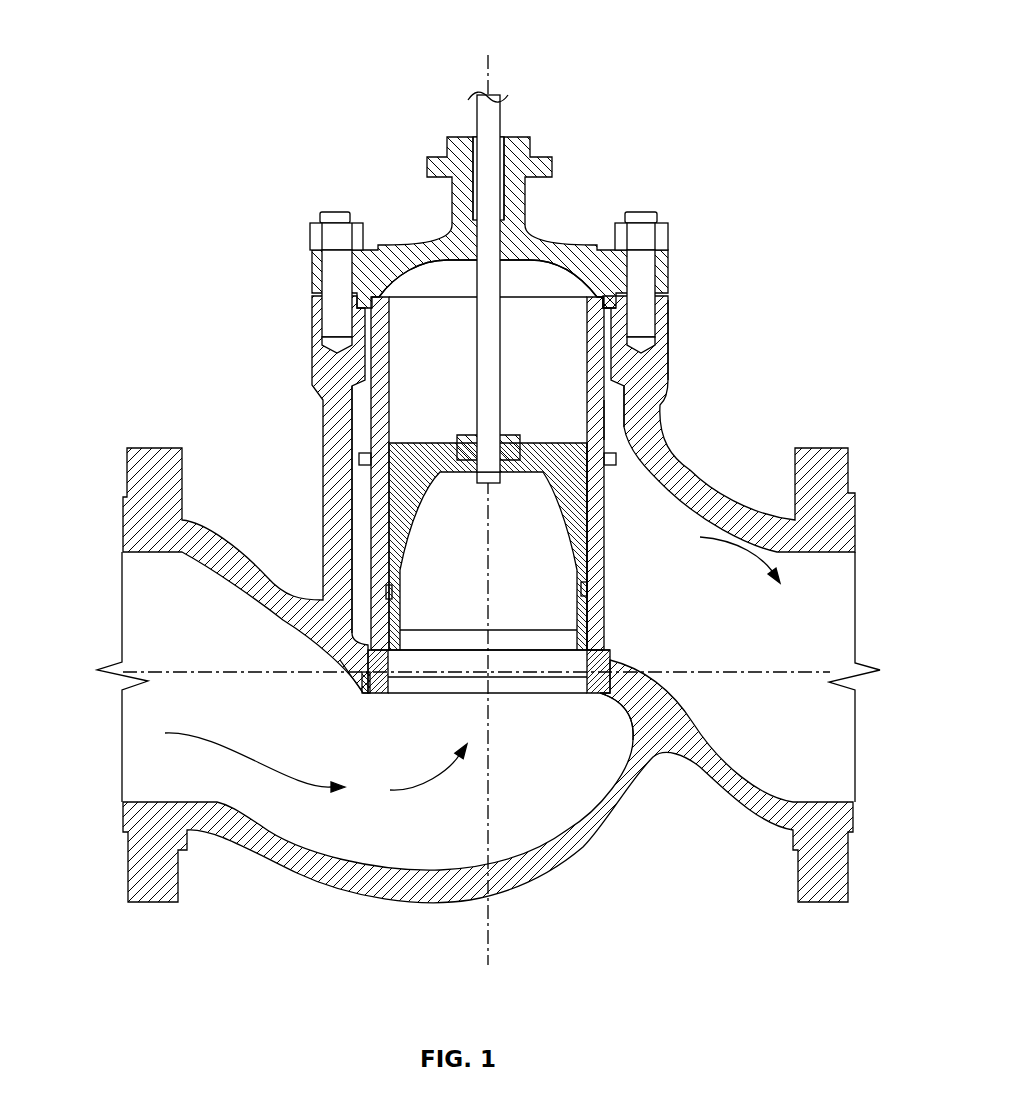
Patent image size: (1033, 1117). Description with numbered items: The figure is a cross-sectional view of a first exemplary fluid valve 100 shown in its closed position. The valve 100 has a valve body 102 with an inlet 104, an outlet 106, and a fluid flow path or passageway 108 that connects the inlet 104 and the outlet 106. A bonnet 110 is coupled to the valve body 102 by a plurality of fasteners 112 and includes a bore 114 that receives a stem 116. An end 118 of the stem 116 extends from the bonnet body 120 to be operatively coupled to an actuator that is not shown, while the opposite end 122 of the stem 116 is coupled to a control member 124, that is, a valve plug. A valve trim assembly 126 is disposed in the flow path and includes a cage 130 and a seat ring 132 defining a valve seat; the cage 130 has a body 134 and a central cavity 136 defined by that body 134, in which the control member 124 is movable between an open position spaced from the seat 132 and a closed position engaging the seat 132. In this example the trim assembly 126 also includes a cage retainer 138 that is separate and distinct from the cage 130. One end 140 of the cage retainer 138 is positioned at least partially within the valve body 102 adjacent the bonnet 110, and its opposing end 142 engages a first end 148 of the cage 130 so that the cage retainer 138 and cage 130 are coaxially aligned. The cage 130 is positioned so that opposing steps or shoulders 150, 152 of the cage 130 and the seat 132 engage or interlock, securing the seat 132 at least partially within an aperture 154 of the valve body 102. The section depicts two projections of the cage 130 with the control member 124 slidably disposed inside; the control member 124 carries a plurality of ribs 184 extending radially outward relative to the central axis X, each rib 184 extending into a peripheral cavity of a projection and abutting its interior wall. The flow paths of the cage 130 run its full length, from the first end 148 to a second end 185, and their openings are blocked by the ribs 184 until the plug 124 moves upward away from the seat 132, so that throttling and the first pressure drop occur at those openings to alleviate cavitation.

The fluid valve 100 is at (210, 45).
The valve body 102 is at (835, 448).
The inlet 104 is at (120, 706).
The outlet 106 is at (857, 743).
The fluid flow path or passageway 108 is at (164, 646).
The bonnet 110 is at (425, 248).
The fasteners 112 is at (335, 215).
The bore 114 is at (455, 140).
The stem 116 is at (500, 165).
The end of the stem 118 is at (481, 95).
The bonnet body 120 is at (520, 228).
The opposite end of the stem 122 is at (490, 440).
The control member 124 is at (377, 490).
The valve trim assembly 126 is at (604, 417).
The cage 130 is at (368, 550).
The seat ring 132 is at (603, 693).
The body of the cage 134 is at (594, 553).
The central cavity 136 is at (583, 530).
The cage retainer 138 is at (628, 380).
The end of the cage retainer 140 is at (605, 325).
The opposing end of the cage retainer 142 is at (632, 432).
The first end of the cage 148 is at (615, 465).
The step or shoulder 150 is at (605, 660).
The step or shoulder 152 is at (593, 668).
The aperture of the valve body 154 is at (380, 690).
The ribs 184 is at (387, 593).
The second end of the cage 185 is at (363, 660).